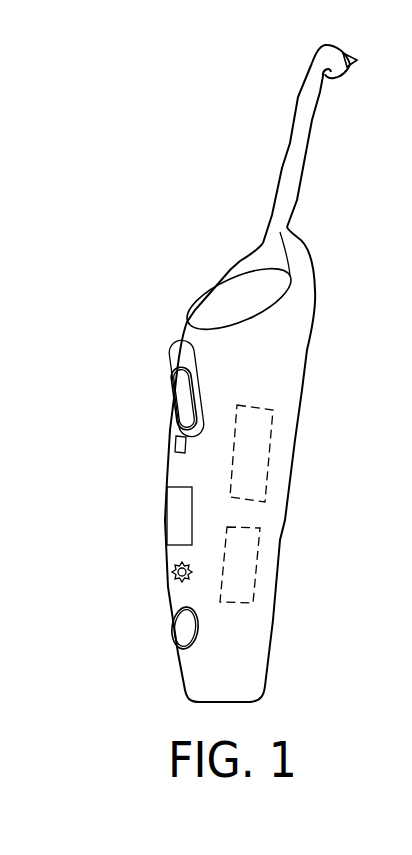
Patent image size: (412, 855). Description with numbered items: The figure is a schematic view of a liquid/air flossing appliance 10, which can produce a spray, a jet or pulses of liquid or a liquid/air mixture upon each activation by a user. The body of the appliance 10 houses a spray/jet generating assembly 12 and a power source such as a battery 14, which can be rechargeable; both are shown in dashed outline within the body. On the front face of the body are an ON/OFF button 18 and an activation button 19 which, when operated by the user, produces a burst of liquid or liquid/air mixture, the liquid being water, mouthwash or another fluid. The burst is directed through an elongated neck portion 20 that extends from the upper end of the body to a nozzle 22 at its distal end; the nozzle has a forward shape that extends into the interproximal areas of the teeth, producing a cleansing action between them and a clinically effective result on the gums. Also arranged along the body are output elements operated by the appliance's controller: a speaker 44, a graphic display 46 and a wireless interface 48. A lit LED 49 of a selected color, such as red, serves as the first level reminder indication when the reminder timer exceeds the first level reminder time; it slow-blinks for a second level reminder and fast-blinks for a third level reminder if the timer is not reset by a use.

The liquid/air flossing appliance 10 is at (177, 147).
The spray/jet generating assembly 12 is at (258, 452).
The battery 14 is at (250, 563).
The ON/OFF button 18 is at (162, 630).
The activation button 19 is at (200, 285).
The elongated neck portion 20 is at (306, 150).
The nozzle 22 is at (351, 68).
The speaker 44 is at (170, 353).
The graphic display 46 is at (160, 512).
The wireless interface 48 is at (162, 400).
The LED 49 is at (160, 575).